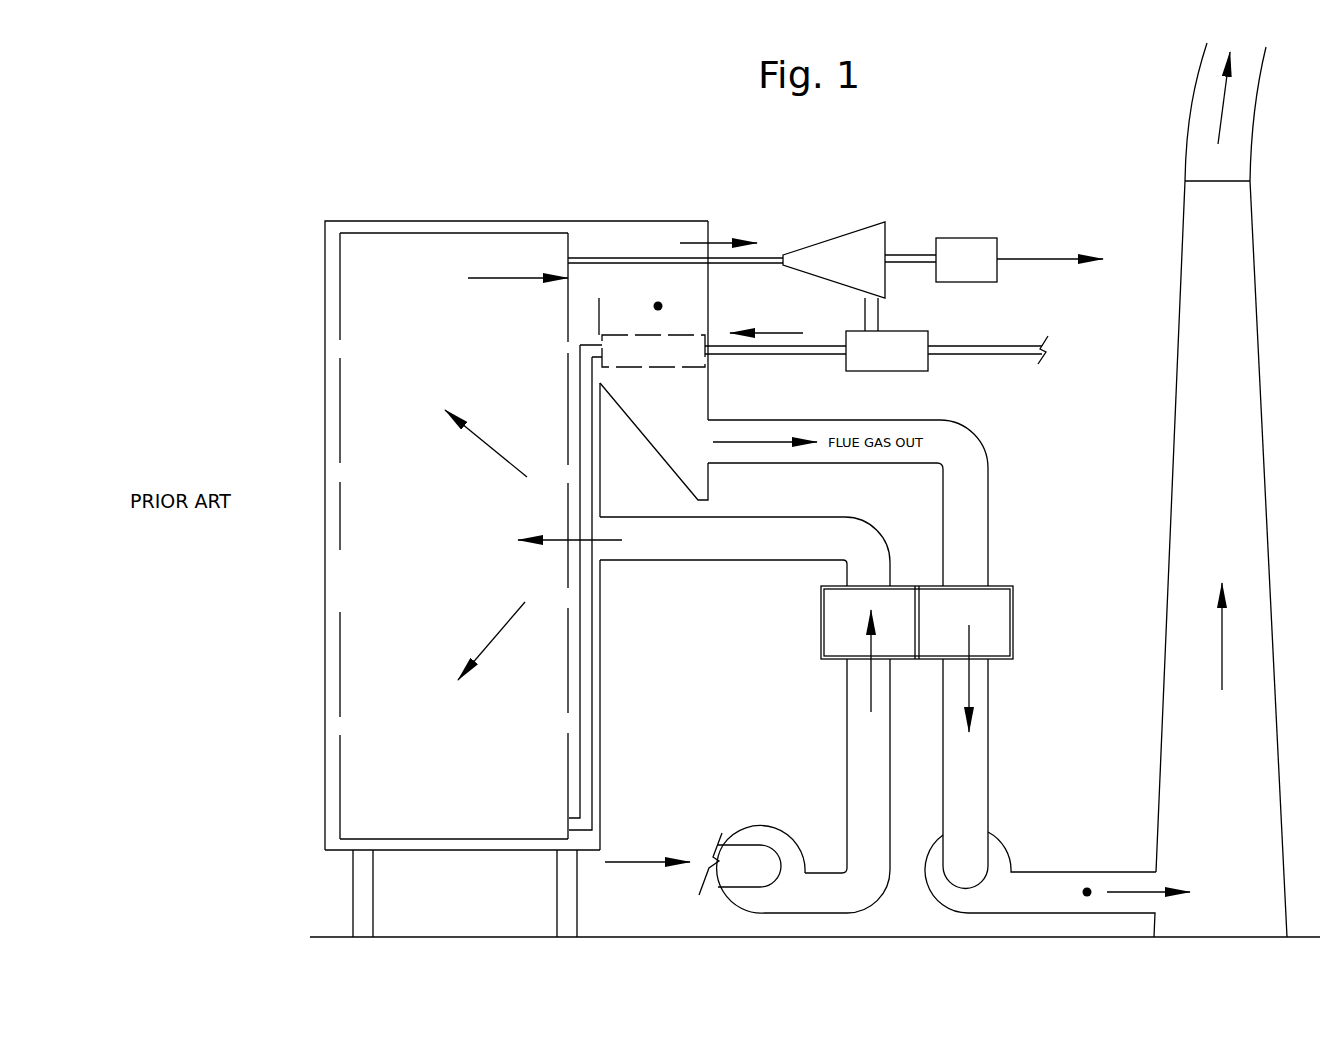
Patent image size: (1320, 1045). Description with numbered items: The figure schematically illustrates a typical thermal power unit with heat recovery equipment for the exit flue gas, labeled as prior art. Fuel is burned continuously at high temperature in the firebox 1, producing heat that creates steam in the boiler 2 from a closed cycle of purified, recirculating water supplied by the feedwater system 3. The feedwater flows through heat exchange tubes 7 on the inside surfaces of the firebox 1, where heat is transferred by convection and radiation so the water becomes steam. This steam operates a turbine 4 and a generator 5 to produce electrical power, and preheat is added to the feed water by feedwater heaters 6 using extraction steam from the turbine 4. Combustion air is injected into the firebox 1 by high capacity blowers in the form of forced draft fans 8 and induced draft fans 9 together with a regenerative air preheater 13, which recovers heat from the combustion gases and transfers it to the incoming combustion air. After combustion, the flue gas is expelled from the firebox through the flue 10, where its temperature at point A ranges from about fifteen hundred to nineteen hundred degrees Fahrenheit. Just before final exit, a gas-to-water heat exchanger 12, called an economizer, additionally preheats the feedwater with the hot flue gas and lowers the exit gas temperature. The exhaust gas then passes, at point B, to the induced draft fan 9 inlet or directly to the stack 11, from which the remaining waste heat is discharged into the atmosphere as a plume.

The firebox 1 is at (380, 197).
The boiler 2 is at (458, 228).
The feedwater system 3 is at (1019, 371).
The turbine 4 is at (823, 242).
The generator 5 is at (960, 238).
The feedwater heaters 6 is at (928, 365).
The heat exchange tubes 7 is at (382, 567).
The forced draft fans 8 is at (770, 830).
The induced draft fans 9 is at (1005, 850).
The flue 10 is at (682, 292).
The stack 11 is at (1171, 457).
The gas-to-water heat exchanger 12 is at (625, 335).
The regenerative air preheater 13 is at (990, 615).
The point A is at (657, 300).
The point B is at (1086, 887).